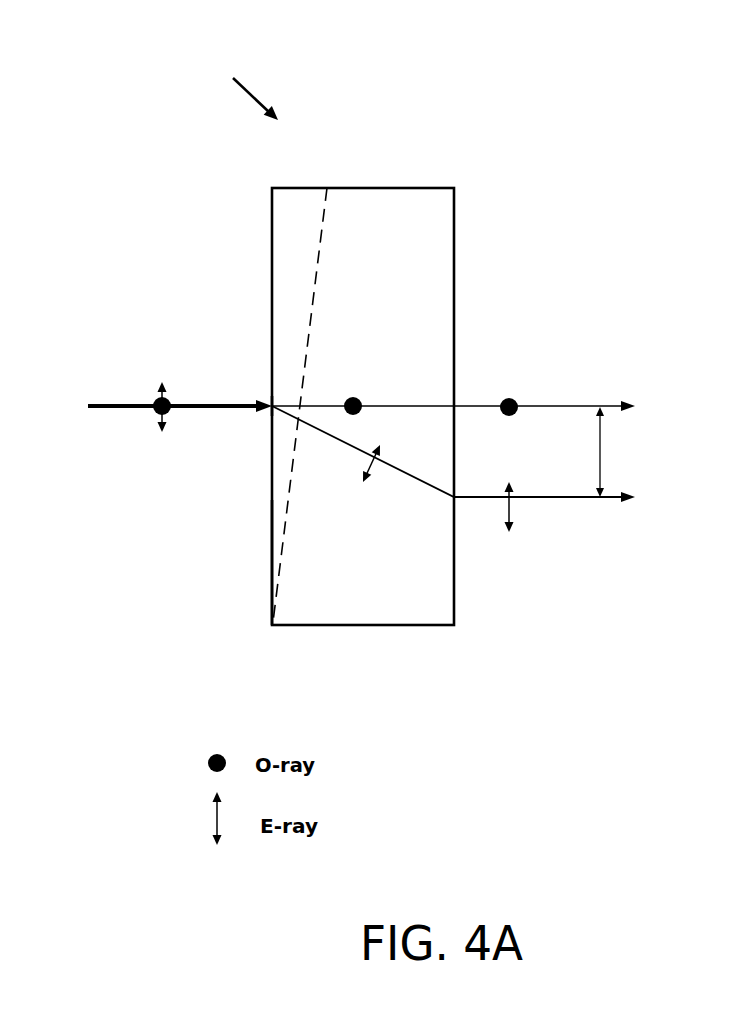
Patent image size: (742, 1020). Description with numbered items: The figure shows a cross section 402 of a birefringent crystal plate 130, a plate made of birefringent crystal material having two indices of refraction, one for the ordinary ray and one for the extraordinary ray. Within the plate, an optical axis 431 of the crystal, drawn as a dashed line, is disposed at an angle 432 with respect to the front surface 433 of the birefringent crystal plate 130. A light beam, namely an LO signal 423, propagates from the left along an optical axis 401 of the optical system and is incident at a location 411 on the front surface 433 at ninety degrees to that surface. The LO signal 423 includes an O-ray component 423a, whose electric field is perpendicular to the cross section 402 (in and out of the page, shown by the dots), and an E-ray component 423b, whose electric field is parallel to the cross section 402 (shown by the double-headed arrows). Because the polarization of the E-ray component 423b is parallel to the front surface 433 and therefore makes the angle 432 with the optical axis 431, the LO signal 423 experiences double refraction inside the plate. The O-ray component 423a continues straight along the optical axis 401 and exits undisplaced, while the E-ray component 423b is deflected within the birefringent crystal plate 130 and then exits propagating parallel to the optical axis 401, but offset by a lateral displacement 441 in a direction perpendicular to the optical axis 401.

The birefringent crystal plate 130 is at (380, 225).
The cross section 402 is at (247, 83).
The optical axis of optical system 401 is at (217, 402).
The location 411 is at (267, 402).
The LO signal 423 is at (125, 405).
The O-ray component 423a is at (565, 405).
The E-ray component 423b is at (583, 498).
The optical axis of birefringent crystal plate 431 is at (320, 237).
The angle 432 is at (287, 513).
The front surface 433 is at (270, 547).
The lateral displacement 441 is at (600, 443).